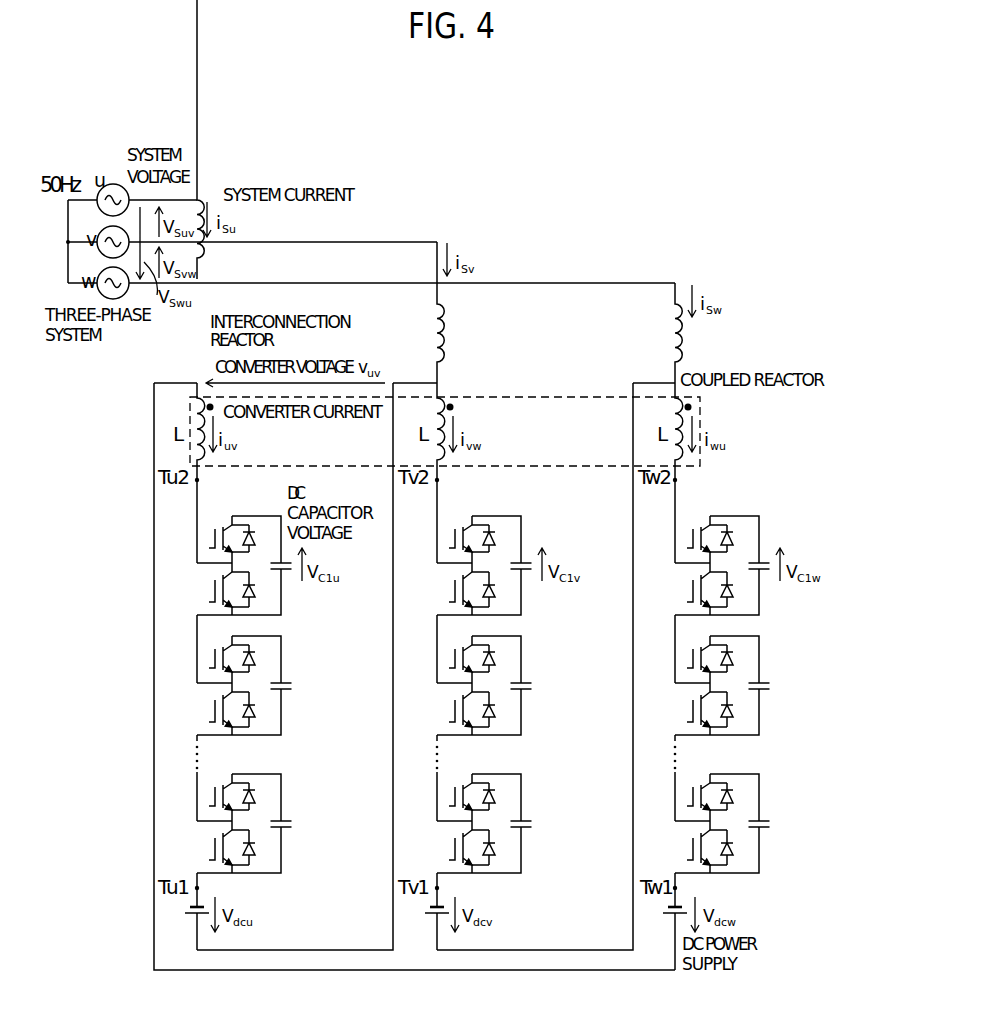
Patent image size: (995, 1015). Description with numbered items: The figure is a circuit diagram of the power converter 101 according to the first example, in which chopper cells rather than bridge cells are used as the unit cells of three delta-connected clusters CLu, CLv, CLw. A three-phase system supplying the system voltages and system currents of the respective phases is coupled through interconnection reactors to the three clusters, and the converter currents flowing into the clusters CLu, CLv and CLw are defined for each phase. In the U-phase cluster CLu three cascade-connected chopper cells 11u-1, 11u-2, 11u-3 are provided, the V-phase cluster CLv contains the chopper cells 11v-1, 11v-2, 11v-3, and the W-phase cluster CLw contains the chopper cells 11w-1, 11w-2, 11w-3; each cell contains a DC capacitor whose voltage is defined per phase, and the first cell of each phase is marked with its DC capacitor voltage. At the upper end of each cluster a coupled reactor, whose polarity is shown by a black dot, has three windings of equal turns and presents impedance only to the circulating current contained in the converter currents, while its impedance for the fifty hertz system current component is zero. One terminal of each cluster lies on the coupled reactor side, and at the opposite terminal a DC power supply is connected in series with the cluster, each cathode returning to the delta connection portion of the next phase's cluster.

The power converter 101 is at (707, 185).
The chopper cell 11u-1 is at (297, 611).
The chopper cell 11u-2 is at (297, 717).
The chopper cell 11u-3 is at (299, 783).
The chopper cell 11v-1 is at (537, 611).
The chopper cell 11v-2 is at (537, 717).
The chopper cell 11v-3 is at (539, 783).
The chopper cell 11w-1 is at (775, 611).
The chopper cell 11w-2 is at (798, 729).
The chopper cell 11w-3 is at (798, 776).
The cluster CLu is at (298, 890).
The cluster CLv is at (538, 890).
The cluster CLw is at (775, 890).